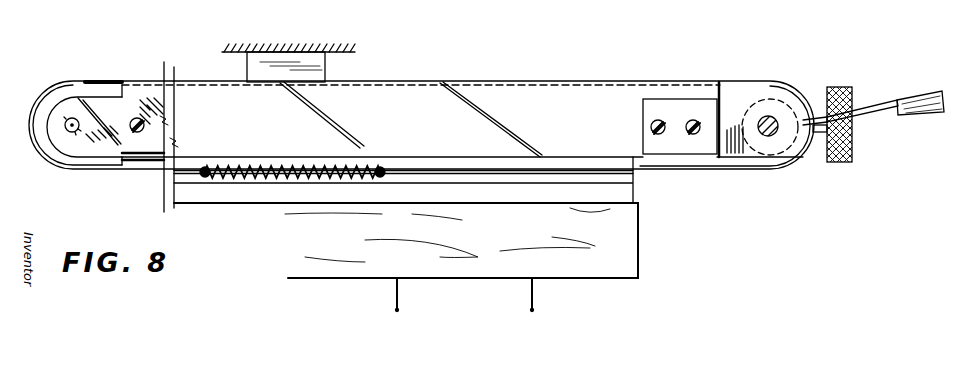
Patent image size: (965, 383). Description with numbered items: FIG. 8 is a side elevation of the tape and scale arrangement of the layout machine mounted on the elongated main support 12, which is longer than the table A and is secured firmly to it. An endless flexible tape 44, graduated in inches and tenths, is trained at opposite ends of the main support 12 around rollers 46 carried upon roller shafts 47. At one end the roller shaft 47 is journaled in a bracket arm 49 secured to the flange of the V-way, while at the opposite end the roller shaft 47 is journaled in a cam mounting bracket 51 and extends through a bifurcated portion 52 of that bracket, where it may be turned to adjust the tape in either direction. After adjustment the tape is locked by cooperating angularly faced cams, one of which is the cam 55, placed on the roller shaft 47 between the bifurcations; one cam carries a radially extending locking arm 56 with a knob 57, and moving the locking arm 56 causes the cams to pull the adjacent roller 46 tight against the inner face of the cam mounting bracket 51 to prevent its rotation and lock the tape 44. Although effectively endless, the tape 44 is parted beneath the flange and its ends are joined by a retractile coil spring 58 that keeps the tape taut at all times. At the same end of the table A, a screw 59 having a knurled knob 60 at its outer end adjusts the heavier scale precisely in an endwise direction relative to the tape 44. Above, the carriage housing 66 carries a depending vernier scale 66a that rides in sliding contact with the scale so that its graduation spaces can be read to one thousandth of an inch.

The main support 12 is at (640, 193).
The endless flexible tape 44 is at (115, 78).
The roller 46 is at (63, 159).
The roller shaft 47 is at (65, 130).
The bracket arm 49 is at (115, 152).
The cam mounting bracket 51 is at (643, 102).
The bifurcated portion 52 is at (725, 98).
The angularly faced cam 55 is at (797, 95).
The locking arm 56 is at (858, 108).
The knob 57 is at (922, 97).
The retractile coil spring 58 is at (250, 177).
The screw 59 is at (804, 150).
The knurled knob 60 is at (854, 158).
The carriage housing 66 is at (348, 55).
The vernier scale 66a is at (247, 70).
The table A is at (645, 246).